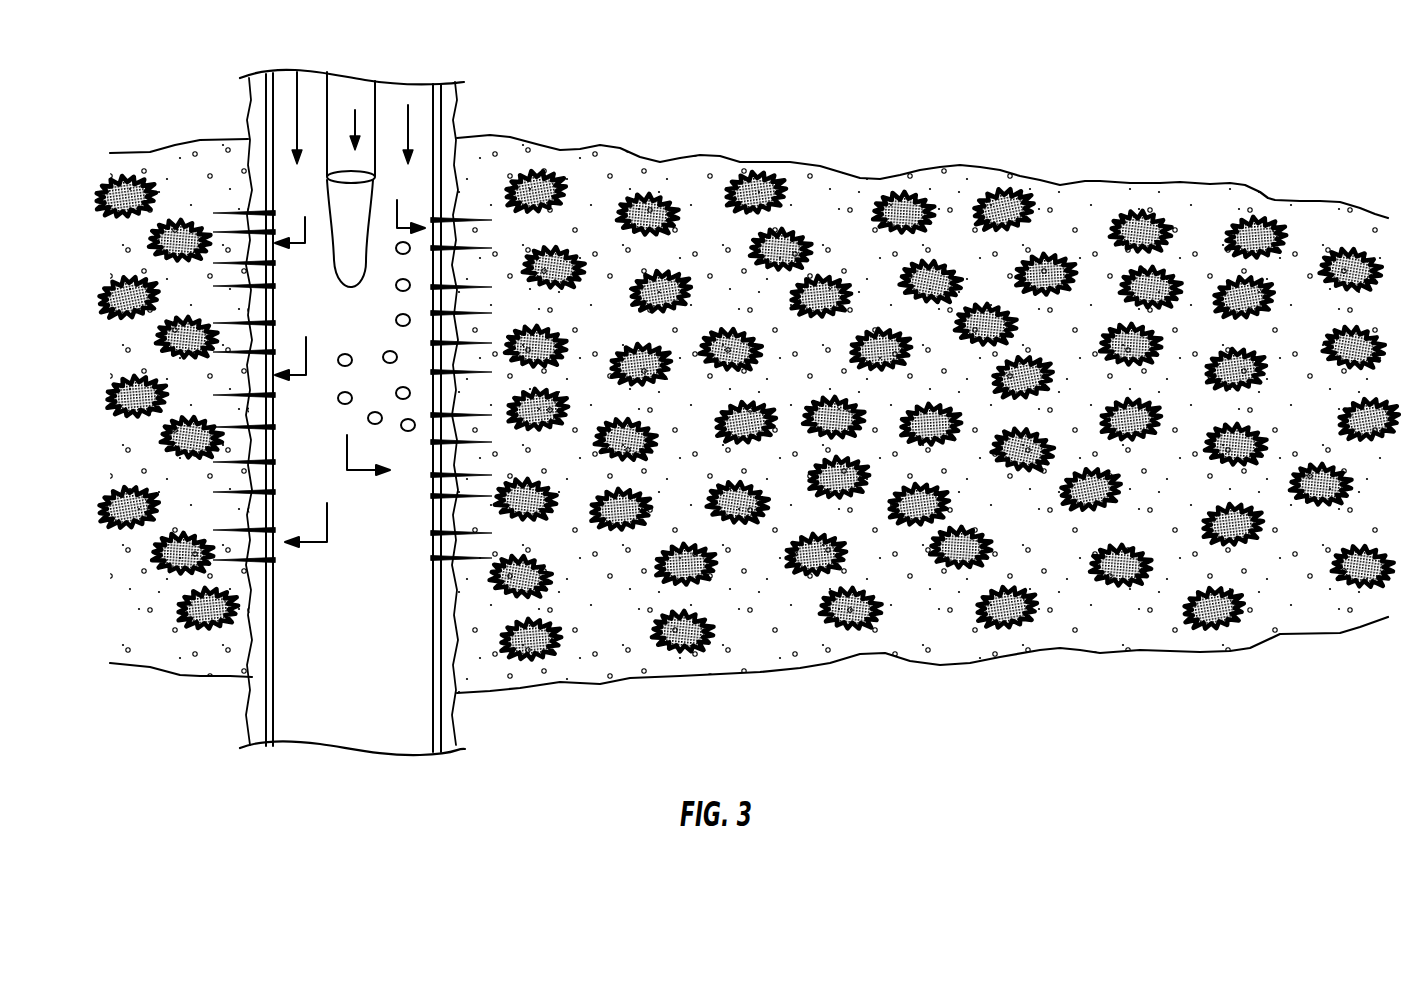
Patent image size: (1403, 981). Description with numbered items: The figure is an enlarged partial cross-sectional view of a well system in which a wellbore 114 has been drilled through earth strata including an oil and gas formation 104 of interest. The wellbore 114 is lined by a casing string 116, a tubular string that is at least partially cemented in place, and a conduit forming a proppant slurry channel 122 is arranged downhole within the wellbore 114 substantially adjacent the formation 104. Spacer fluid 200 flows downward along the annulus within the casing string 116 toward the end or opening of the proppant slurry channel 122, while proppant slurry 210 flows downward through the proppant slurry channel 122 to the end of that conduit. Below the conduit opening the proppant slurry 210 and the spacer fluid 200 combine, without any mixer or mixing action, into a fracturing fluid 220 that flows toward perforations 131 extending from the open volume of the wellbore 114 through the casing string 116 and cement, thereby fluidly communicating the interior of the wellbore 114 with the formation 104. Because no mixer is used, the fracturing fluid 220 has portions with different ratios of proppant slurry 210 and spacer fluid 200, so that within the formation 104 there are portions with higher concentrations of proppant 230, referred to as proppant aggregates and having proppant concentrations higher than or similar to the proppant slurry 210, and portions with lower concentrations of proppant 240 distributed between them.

The formation 104 is at (700, 677).
The wellbore 114 is at (457, 720).
The casing string 116 is at (455, 85).
The proppant slurry channel 122 is at (325, 86).
The perforations 131 is at (272, 530).
The spacer fluid 200 is at (295, 113).
The proppant slurry 210 is at (355, 125).
The fracturing fluid 220 is at (362, 452).
The portions with higher concentrations of proppant 230 is at (918, 505).
The portions with lower concentrations of proppant 240 is at (852, 255).